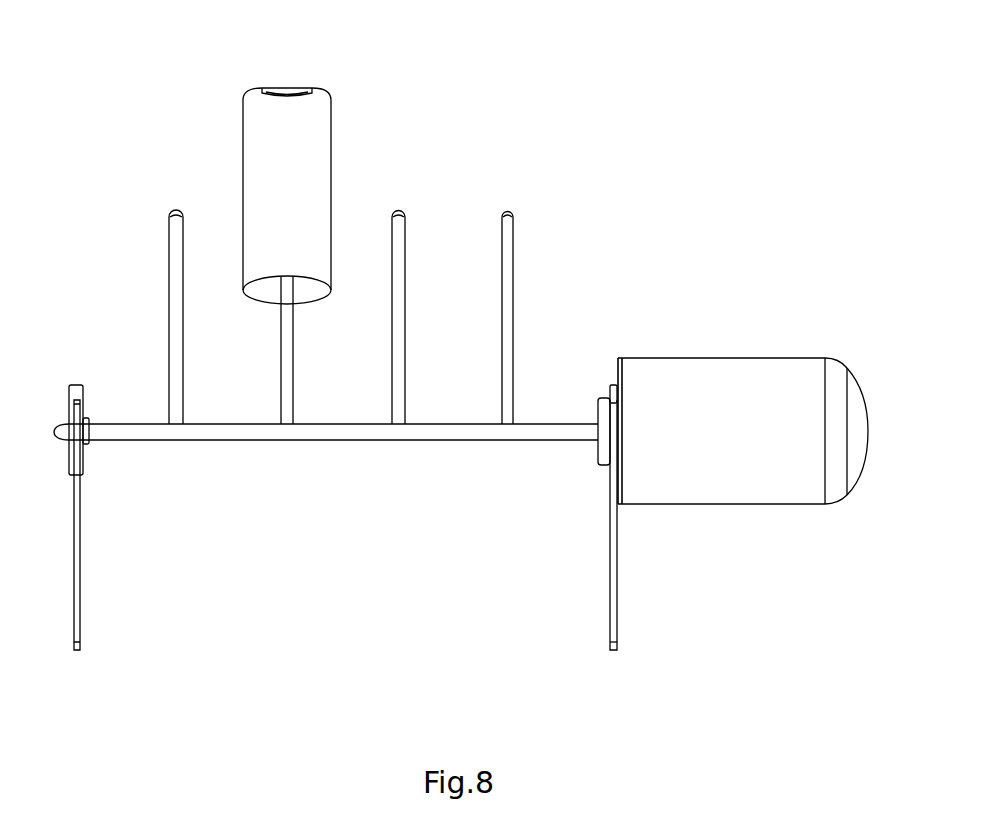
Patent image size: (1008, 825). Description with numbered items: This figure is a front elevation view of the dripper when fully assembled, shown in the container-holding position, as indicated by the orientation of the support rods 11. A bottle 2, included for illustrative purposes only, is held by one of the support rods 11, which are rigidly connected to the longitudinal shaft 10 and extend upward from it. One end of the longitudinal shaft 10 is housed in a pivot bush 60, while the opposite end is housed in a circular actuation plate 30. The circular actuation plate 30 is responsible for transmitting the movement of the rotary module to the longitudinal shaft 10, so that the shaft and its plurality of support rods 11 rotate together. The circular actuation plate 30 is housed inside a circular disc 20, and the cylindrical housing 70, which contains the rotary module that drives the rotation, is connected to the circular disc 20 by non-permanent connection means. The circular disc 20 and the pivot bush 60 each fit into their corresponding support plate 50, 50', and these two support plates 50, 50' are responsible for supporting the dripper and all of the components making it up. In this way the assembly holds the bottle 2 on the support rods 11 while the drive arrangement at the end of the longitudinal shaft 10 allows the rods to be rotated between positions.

The bottle 2 is at (287, 88).
The longitudinal shaft 10 is at (339, 440).
The support rods 11 is at (398, 210).
The circular disc 20 is at (612, 375).
The circular actuation plate 30 is at (598, 410).
The support plate 50 is at (611, 566).
The support plate 50' is at (74, 566).
The pivot bush 60 is at (77, 385).
The cylindrical housing 70 is at (737, 358).